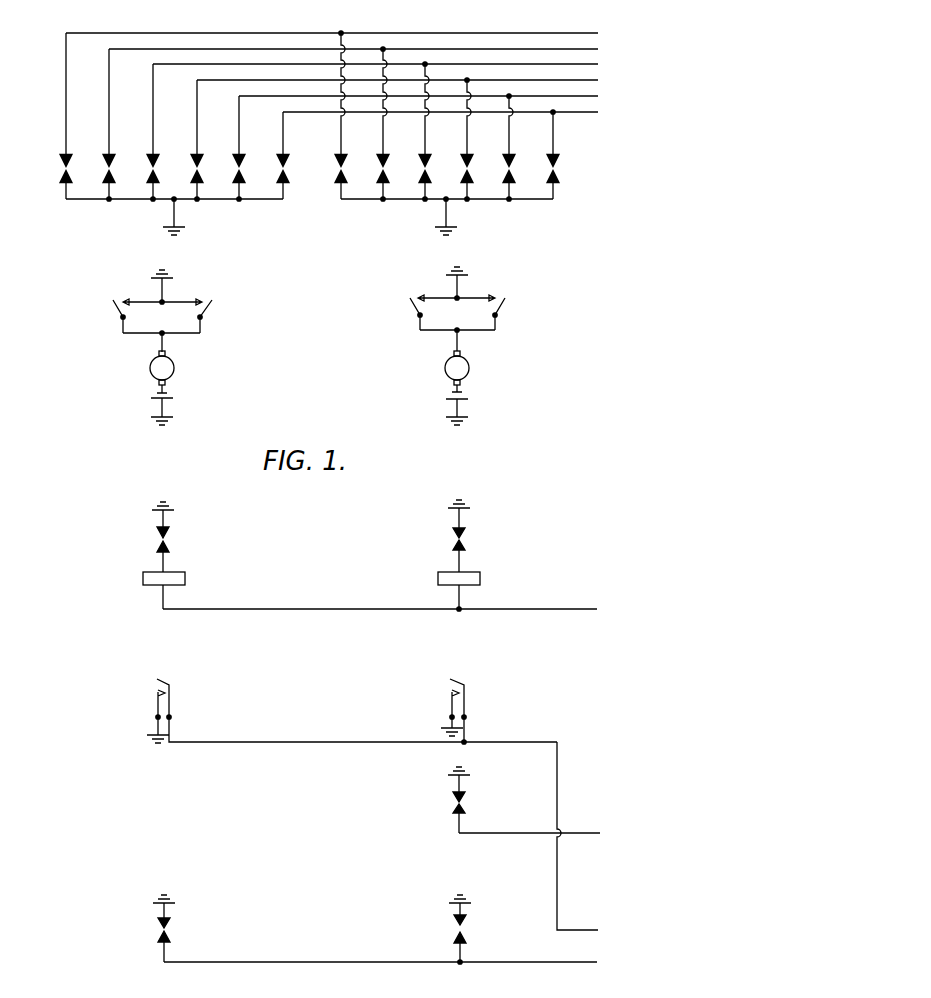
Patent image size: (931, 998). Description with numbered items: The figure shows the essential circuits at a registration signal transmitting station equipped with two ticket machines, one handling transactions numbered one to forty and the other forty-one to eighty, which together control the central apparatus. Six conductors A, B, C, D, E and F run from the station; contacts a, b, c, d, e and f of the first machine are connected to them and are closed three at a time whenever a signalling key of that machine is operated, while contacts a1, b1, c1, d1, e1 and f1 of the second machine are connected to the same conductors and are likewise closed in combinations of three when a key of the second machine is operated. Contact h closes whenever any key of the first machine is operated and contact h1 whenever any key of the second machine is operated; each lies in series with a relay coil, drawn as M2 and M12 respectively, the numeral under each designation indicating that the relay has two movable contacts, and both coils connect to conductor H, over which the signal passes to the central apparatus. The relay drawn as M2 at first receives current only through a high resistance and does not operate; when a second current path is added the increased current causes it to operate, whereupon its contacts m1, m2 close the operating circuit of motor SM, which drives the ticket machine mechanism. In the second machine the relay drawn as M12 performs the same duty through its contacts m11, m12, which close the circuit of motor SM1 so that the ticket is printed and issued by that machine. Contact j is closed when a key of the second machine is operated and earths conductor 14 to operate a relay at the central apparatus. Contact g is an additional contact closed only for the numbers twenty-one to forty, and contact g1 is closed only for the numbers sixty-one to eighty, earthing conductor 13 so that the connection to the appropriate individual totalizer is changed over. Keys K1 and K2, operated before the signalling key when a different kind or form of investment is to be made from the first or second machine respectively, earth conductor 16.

The conductor A is at (332, 26).
The conductor B is at (353, 42).
The conductor C is at (375, 57).
The conductor D is at (397, 73).
The conductor E is at (418, 89).
The conductor F is at (440, 105).
The contact a is at (59, 116).
The contact b is at (103, 125).
The contact c is at (148, 132).
The contact d is at (190, 140).
The contact e is at (233, 148).
The contact f is at (276, 155).
The contact a1 is at (332, 115).
The contact b1 is at (375, 124).
The contact c1 is at (416, 131).
The contact d1 is at (458, 139).
The contact e1 is at (500, 147).
The contact f1 is at (546, 154).
The motor SM is at (165, 347).
The motor SM1 is at (460, 346).
The contact m1 is at (113, 305).
The contact m2 is at (214, 305).
The contact m11 is at (412, 302).
The contact m12 is at (509, 302).
The contact h is at (168, 537).
The contact h1 is at (449, 536).
The relay M M2 is at (135, 580).
The relay M1 M12 is at (506, 578).
The conductor H is at (380, 601).
The key K1 is at (343, 709).
The key K2 is at (445, 710).
The contact j is at (450, 800).
The conductor 14 is at (529, 826).
The conductor 16 is at (577, 837).
The conductor 13 is at (380, 953).
The contact g is at (156, 928).
The contact g1 is at (450, 929).